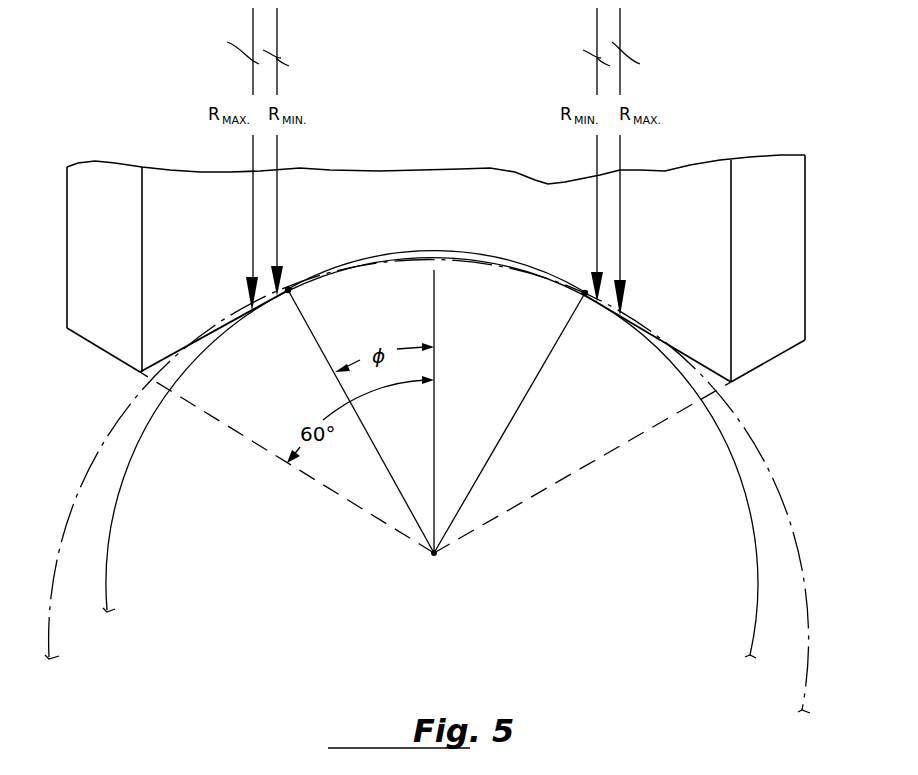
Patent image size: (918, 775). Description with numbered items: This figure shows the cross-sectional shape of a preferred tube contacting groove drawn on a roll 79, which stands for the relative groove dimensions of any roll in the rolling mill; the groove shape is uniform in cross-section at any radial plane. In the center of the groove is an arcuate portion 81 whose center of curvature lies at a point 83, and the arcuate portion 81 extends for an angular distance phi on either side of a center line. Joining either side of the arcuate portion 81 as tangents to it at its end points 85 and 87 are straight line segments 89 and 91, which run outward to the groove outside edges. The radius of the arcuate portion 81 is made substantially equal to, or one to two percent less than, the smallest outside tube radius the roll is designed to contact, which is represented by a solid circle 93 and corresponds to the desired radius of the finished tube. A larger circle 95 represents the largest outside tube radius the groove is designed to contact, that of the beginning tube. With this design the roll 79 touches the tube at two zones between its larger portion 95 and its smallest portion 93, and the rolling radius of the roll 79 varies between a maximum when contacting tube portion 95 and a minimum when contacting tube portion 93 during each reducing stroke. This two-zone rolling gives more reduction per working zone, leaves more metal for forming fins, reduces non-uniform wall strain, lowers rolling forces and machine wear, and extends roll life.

The roll 79 is at (790, 268).
The arcuate portion 81 is at (462, 252).
The point 83 is at (436, 556).
The end point 85 is at (288, 288).
The end point 87 is at (585, 291).
The straight line segment 89 is at (178, 352).
The straight line segment 91 is at (680, 350).
The solid circle 93 is at (755, 558).
The circle 95 is at (800, 527).